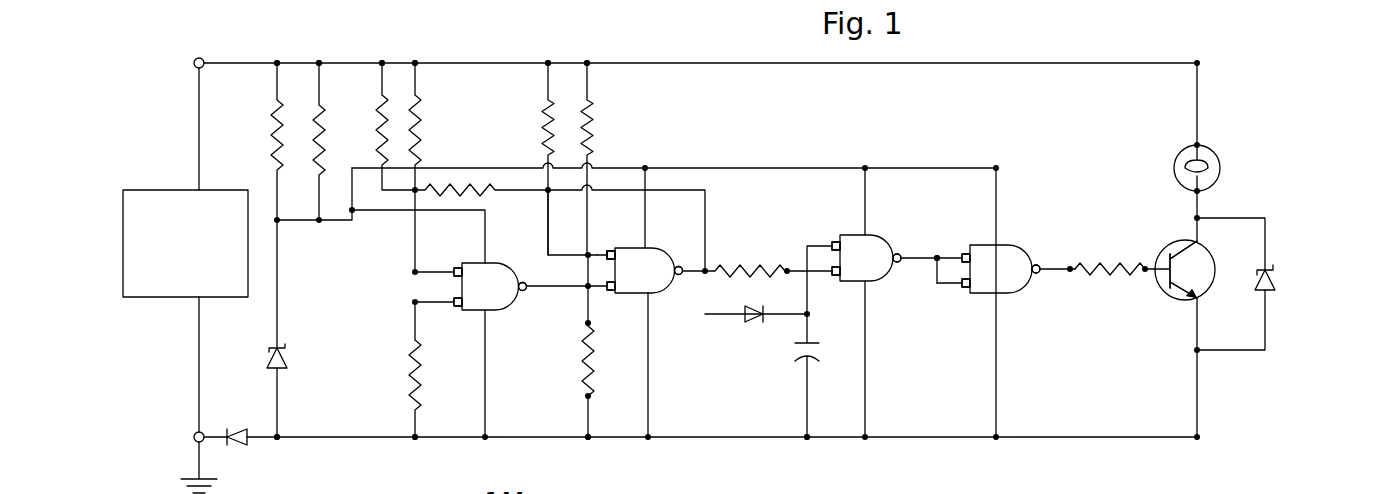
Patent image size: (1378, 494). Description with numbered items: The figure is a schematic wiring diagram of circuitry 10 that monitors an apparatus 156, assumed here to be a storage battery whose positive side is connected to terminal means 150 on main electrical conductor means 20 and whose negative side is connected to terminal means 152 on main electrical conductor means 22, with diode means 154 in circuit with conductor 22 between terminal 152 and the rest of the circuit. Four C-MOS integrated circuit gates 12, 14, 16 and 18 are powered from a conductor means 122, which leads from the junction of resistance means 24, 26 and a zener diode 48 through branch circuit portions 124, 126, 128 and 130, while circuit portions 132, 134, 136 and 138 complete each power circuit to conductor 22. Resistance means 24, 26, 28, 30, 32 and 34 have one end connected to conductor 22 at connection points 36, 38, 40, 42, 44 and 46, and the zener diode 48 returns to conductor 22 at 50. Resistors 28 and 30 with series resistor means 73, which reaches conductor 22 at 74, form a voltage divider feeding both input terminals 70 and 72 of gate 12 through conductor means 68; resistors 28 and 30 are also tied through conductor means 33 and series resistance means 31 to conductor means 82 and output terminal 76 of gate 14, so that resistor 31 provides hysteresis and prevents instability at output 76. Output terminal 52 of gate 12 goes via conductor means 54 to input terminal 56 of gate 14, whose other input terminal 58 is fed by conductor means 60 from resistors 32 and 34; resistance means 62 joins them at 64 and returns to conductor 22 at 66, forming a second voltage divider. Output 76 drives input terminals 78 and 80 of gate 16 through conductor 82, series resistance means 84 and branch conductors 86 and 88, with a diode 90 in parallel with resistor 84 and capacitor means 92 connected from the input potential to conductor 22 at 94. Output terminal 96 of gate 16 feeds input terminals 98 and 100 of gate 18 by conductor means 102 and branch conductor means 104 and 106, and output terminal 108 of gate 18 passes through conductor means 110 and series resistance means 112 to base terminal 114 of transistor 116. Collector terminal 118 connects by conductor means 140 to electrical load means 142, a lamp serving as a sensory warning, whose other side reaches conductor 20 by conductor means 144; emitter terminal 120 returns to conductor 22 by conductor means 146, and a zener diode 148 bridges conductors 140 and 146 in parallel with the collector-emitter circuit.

The circuitry 10 is at (1000, 40).
The integrated circuit gate 12 is at (503, 303).
The integrated circuit gate 14 is at (660, 294).
The integrated circuit gate 16 is at (880, 284).
The integrated circuit gate 18 is at (1025, 289).
The main electrical conductor means 20 is at (666, 62).
The main electrical conductor means 22 is at (1055, 440).
The resistance means 24 is at (273, 118).
The resistance means 26 is at (316, 150).
The resistance means 28 is at (376, 120).
The resistance means 30 is at (418, 136).
The series resistance means 31 is at (461, 186).
The resistance means 32 is at (545, 116).
The conductor means 33 is at (665, 192).
The resistance means 34 is at (591, 118).
The connection point 36 is at (279, 62).
The connection point 38 is at (320, 62).
The connection point 40 is at (383, 62).
The connection point 42 is at (416, 62).
The connection point 44 is at (549, 62).
The connection point 46 is at (588, 62).
The zener diode 48 is at (289, 359).
The connection point 50 is at (282, 441).
The output terminal 52 is at (521, 281).
The conductor means 54 is at (545, 290).
The input terminal 56 is at (592, 290).
The input terminal 58 is at (609, 250).
The conductor means 60 is at (584, 252).
The resistance means 62 is at (584, 340).
The connection point 64 is at (578, 256).
The connection point 66 is at (591, 441).
The conductor means 68 is at (414, 233).
The input terminal 70 is at (453, 268).
The input terminal 72 is at (453, 306).
The series resistor means 73 is at (412, 366).
The connection point 74 is at (416, 441).
The output terminal 76 is at (680, 266).
The input terminal 78 is at (834, 242).
The input terminal 80 is at (834, 278).
The conductor means 82 is at (708, 266).
The series resistance means 84 is at (750, 265).
The branch conductor 86 is at (810, 243).
The branch conductor 88 is at (812, 296).
The diode 90 is at (752, 323).
The capacitor means 92 is at (800, 368).
The connection point 94 is at (807, 441).
The output terminal 96 is at (902, 254).
The input terminal 98 is at (966, 254).
The input terminal 100 is at (967, 290).
The conductor means 102 is at (938, 255).
The branch conductor means 104 is at (945, 257).
The branch conductor means 106 is at (936, 285).
The output terminal 108 is at (1037, 263).
The conductor means 110 is at (1052, 268).
The series resistance means 112 is at (1102, 263).
The base terminal 114 is at (1162, 286).
The transistor 116 is at (1212, 262).
The collector terminal 118 is at (1176, 250).
The emitter terminal 120 is at (1192, 297).
The conductor means 122 is at (765, 165).
The branch circuit portion 124 is at (487, 228).
The branch circuit portion 126 is at (648, 232).
The branch circuit portion 128 is at (862, 175).
The branch circuit portion 130 is at (1000, 180).
The circuit portion 132 is at (483, 366).
The circuit portion 134 is at (651, 388).
The circuit portion 136 is at (868, 388).
The circuit portion 138 is at (1000, 388).
The conductor means 140 is at (1202, 207).
The electrical load means 142 is at (1226, 170).
The conductor means 144 is at (1200, 95).
The conductor means 146 is at (1202, 390).
The zener diode 148 is at (1278, 283).
The terminal means 150 is at (204, 57).
The terminal means 152 is at (205, 432).
The diode means 154 is at (238, 452).
The monitored apparatus 156 is at (171, 299).